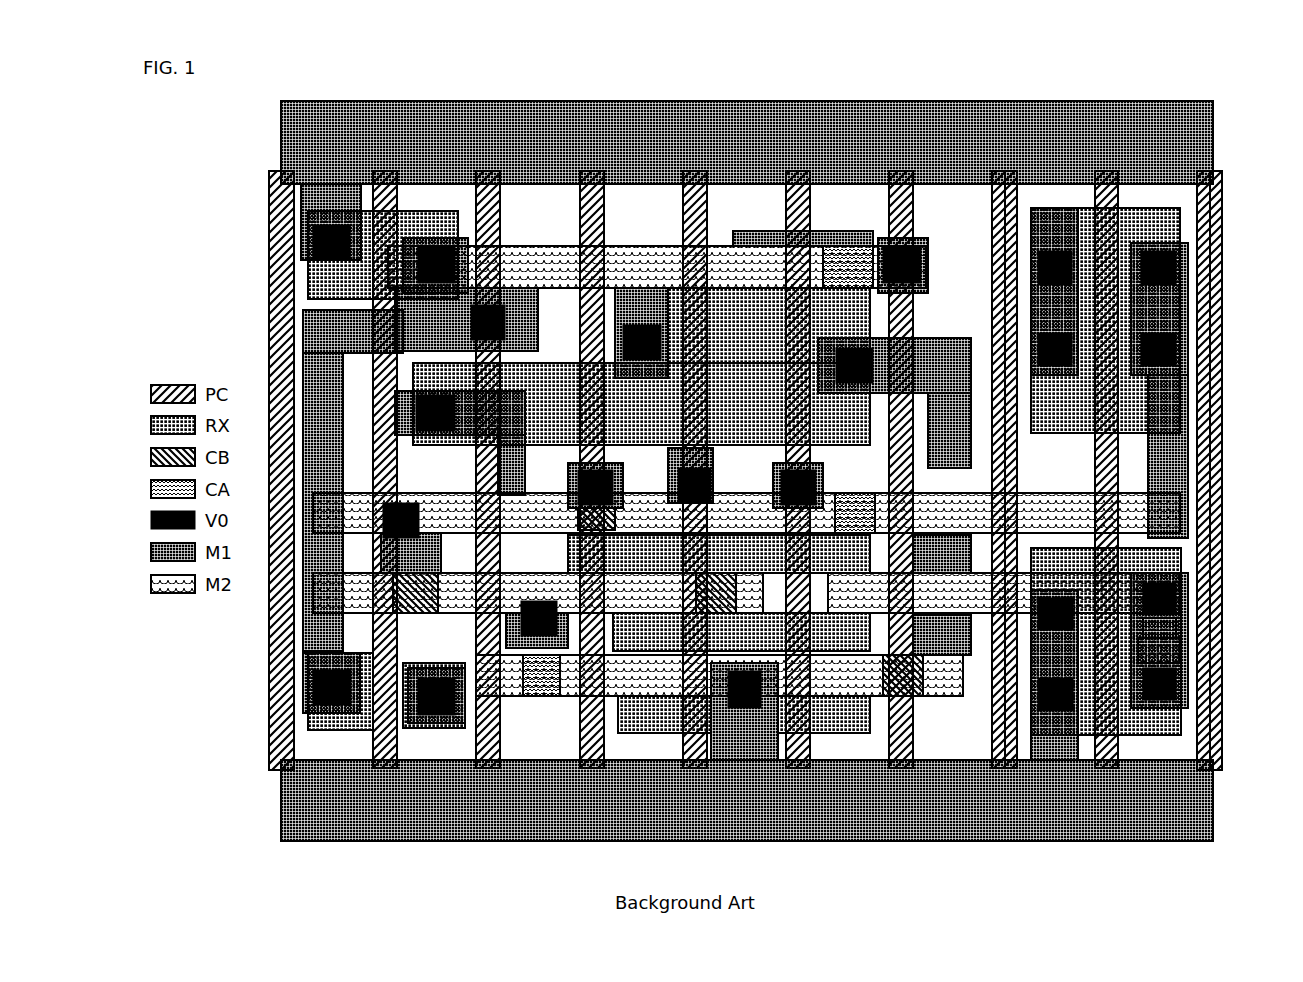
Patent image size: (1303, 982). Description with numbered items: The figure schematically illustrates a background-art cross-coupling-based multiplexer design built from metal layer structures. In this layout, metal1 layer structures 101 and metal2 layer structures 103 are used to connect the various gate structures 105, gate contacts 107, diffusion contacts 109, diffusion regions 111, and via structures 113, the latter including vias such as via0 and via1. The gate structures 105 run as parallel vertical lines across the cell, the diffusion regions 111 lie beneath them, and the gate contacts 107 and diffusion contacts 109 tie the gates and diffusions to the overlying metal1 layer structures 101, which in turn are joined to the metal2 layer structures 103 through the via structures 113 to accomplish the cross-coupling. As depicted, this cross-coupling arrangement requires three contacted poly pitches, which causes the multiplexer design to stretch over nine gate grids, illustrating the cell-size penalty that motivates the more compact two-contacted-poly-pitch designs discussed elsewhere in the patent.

The metal1 layer structures 101 is at (737, 93).
The metal2 layer structures 103 is at (532, 237).
The gate structures 105 is at (262, 164).
The gate contacts 107 is at (607, 498).
The diffusion contacts 109 is at (840, 237).
The diffusion regions 111 is at (298, 278).
The via structures 113 is at (920, 283).